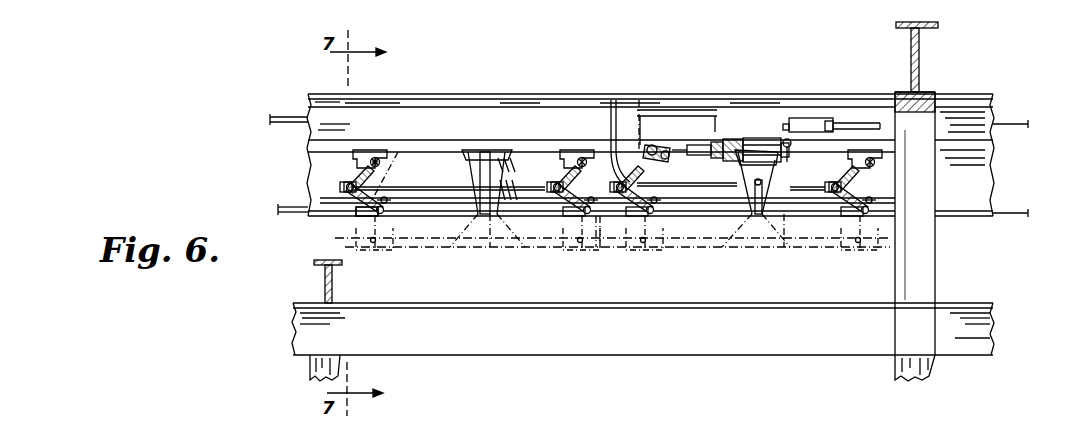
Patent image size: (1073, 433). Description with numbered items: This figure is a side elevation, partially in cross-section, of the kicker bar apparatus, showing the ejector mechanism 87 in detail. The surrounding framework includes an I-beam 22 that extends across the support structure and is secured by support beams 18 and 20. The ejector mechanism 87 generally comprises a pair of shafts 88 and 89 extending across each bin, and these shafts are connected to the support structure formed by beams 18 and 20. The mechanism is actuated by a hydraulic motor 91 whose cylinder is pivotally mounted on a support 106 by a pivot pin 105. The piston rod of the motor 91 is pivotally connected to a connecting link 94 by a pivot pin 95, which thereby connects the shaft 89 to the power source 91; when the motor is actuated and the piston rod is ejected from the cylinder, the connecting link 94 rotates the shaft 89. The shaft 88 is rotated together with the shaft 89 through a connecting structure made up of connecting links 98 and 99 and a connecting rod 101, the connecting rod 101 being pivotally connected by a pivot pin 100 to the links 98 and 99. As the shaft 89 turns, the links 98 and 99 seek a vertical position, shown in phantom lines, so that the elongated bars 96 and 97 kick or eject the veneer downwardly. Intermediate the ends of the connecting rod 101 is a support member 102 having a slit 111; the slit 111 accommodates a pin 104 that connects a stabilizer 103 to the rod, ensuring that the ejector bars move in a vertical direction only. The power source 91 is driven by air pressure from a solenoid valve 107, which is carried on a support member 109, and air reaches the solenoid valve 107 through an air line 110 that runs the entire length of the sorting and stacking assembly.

The support beam 18 is at (318, 153).
The support beam 20 is at (310, 128).
The I-beam 22 is at (921, 45).
The ejector mechanism 87 is at (598, 262).
The shaft 88 is at (582, 150).
The shaft 89 is at (378, 160).
The hydraulic motor 91 is at (715, 128).
The connecting link 94 is at (634, 118).
The pivot pin 95 is at (654, 146).
The elongated bar 96 is at (356, 212).
The elongated bar 97 is at (690, 216).
The connecting link 98 is at (366, 150).
The connecting link 99 is at (375, 207).
The pivot pin 100 is at (340, 186).
The connecting rod 101 is at (400, 166).
The support member 102 is at (748, 140).
The stabilizer 103 is at (472, 186).
The pin 104 is at (468, 160).
The pivot pin 105 is at (792, 146).
The support 106 is at (798, 118).
The solenoid valve 107 is at (833, 125).
The support member 109 is at (822, 124).
The air line 110 is at (683, 112).
The slit 111 is at (514, 177).